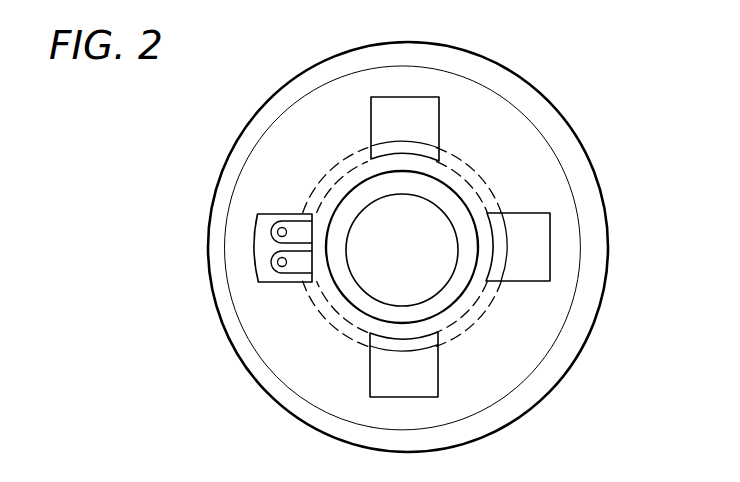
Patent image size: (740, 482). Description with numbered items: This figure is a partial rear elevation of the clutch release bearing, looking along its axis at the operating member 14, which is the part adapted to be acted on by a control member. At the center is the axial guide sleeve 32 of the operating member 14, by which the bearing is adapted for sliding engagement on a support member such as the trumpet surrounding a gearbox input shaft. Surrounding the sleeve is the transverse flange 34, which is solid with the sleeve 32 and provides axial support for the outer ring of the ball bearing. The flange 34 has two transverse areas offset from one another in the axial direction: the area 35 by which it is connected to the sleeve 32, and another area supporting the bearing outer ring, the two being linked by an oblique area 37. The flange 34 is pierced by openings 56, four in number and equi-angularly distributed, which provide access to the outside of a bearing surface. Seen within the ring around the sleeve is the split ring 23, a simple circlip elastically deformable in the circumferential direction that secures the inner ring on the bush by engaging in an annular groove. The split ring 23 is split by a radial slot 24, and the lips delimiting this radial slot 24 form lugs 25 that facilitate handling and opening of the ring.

The operating member 14 is at (583, 358).
The split ring 23 is at (514, 257).
The radial slot 24 is at (283, 247).
The lugs 25 is at (274, 228).
The axial guide sleeve 32 is at (410, 182).
The transverse flange 34 is at (524, 348).
The area 35 is at (312, 342).
The oblique area 37 is at (295, 387).
The openings 56 is at (428, 99).